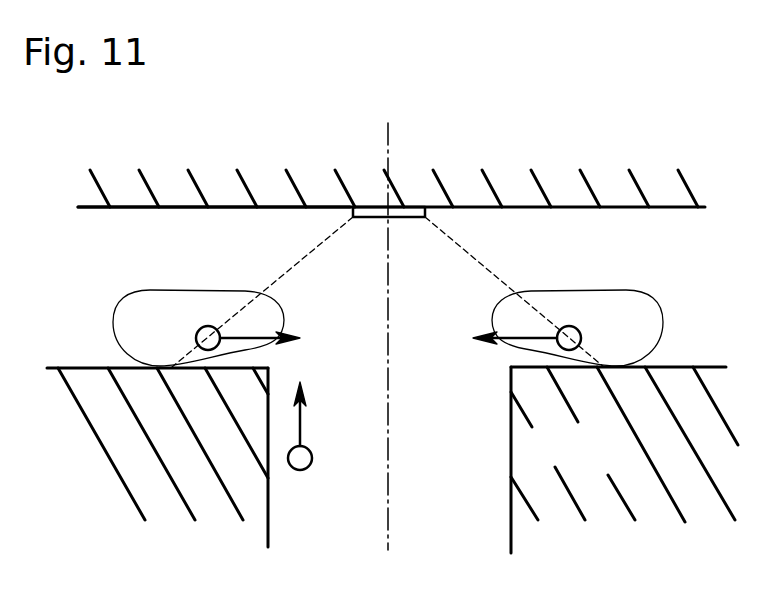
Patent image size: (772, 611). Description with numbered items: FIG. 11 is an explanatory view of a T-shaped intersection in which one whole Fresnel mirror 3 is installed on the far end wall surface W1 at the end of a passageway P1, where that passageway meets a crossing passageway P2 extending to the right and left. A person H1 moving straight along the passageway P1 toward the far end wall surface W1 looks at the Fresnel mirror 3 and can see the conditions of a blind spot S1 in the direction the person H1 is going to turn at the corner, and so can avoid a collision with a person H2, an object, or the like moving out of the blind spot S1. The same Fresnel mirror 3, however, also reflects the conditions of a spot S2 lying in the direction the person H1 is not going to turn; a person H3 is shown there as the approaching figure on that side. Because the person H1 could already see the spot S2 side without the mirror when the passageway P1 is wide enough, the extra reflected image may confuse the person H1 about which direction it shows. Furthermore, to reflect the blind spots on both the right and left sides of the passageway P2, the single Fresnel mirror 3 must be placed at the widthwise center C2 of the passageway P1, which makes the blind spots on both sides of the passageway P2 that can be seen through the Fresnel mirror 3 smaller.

The Fresnel mirror 3 is at (380, 218).
The widthwise center C2 is at (397, 320).
The passageway P2 is at (514, 218).
The passageway P1 is at (490, 462).
The far end wall surface W1 is at (157, 208).
The blind spot S1 is at (212, 290).
The spot S2 is at (567, 291).
The person H1 is at (314, 427).
The person H2 is at (234, 330).
The third position H3 is at (540, 330).